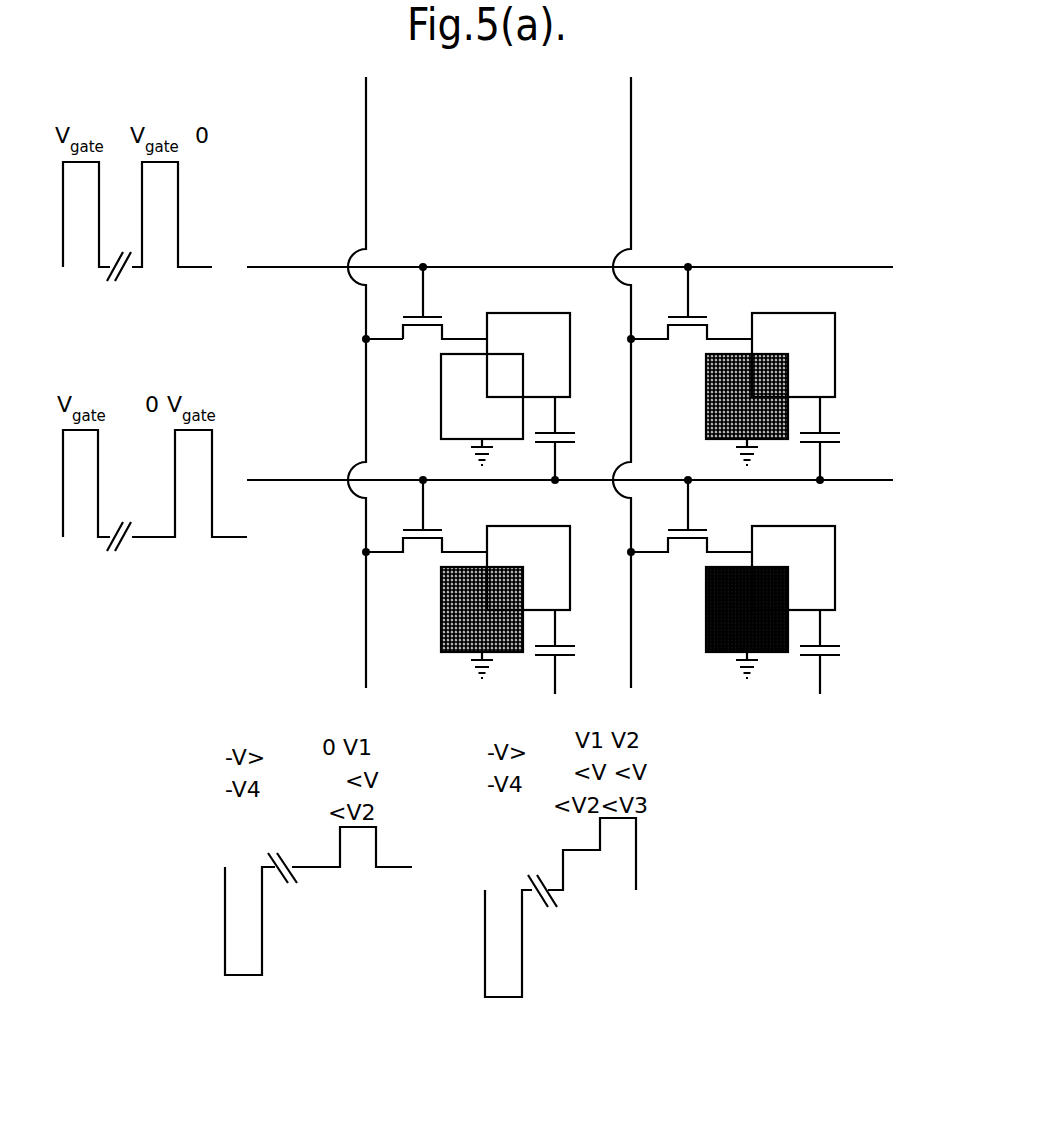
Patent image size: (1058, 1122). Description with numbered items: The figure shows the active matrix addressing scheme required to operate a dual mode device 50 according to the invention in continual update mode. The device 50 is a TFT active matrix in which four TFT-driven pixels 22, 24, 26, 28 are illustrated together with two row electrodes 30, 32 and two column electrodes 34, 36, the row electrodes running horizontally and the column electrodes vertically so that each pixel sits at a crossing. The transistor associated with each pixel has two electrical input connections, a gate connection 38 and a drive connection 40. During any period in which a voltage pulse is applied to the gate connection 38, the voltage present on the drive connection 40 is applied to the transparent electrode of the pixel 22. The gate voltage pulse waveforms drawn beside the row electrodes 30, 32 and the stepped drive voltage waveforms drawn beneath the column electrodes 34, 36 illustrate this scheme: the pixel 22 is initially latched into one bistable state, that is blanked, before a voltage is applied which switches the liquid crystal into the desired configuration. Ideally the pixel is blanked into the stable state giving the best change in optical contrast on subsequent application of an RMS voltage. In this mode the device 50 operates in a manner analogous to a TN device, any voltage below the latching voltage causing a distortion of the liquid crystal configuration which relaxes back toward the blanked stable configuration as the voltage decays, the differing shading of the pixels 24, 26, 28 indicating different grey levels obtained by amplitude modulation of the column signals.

The pixel 22 is at (531, 325).
The pixel 24 is at (830, 330).
The pixel 26 is at (835, 553).
The pixel 28 is at (570, 578).
The row electrode 30 is at (883, 267).
The row electrode 32 is at (883, 480).
The column electrode 34 is at (366, 114).
The column electrode 36 is at (631, 110).
The gate connection 38 is at (424, 290).
The drive connection 40 is at (382, 338).
The dual mode device 50 is at (590, 439).